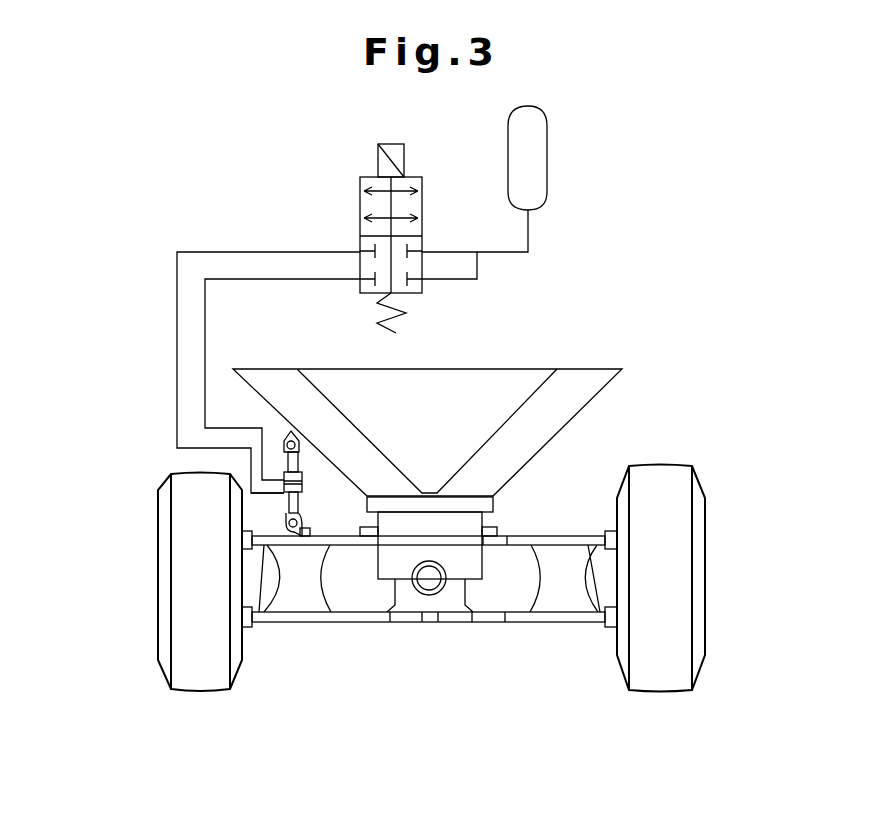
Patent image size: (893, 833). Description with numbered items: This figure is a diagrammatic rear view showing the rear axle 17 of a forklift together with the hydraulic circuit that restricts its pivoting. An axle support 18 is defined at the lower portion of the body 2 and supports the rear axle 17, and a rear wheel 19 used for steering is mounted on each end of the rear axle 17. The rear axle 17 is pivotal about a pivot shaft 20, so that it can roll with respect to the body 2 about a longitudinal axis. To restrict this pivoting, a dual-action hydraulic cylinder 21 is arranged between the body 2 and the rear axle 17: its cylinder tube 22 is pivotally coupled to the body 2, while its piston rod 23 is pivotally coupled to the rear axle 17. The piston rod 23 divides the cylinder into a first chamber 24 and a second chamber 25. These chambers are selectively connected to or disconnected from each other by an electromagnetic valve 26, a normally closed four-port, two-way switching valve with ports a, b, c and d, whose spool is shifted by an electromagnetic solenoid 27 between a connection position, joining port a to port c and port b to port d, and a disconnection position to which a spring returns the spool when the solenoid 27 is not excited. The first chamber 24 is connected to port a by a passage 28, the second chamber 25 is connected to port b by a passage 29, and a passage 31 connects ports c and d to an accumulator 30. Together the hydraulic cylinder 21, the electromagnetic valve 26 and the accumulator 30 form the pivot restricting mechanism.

The body 2 is at (588, 367).
The rear axle 17 is at (528, 652).
The axle support 18 is at (477, 518).
The rear wheel 19 is at (167, 592).
The pivot shaft 20 is at (415, 592).
The hydraulic cylinder 21 is at (305, 498).
The cylinder tube 22 is at (302, 477).
The piston rod 23 is at (305, 536).
The first chamber 24 is at (303, 482).
The second chamber 25 is at (283, 500).
The electromagnetic valve 26 is at (412, 173).
The electromagnetic solenoid 27 is at (377, 163).
The passage 28 is at (205, 323).
The passage 29 is at (177, 327).
The accumulator 30 is at (547, 162).
The passage 31 is at (500, 253).